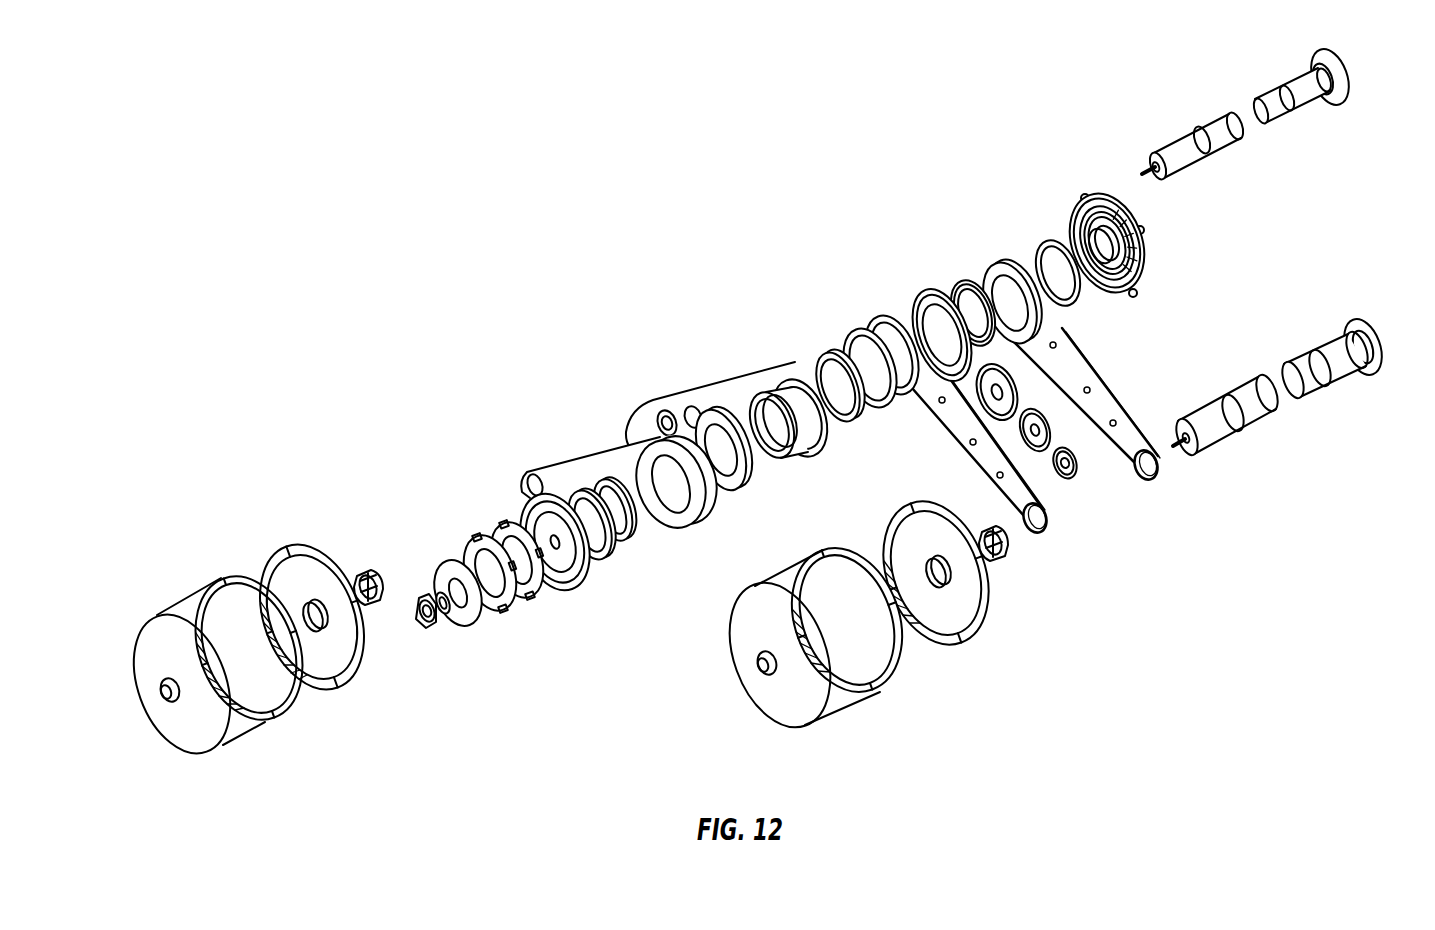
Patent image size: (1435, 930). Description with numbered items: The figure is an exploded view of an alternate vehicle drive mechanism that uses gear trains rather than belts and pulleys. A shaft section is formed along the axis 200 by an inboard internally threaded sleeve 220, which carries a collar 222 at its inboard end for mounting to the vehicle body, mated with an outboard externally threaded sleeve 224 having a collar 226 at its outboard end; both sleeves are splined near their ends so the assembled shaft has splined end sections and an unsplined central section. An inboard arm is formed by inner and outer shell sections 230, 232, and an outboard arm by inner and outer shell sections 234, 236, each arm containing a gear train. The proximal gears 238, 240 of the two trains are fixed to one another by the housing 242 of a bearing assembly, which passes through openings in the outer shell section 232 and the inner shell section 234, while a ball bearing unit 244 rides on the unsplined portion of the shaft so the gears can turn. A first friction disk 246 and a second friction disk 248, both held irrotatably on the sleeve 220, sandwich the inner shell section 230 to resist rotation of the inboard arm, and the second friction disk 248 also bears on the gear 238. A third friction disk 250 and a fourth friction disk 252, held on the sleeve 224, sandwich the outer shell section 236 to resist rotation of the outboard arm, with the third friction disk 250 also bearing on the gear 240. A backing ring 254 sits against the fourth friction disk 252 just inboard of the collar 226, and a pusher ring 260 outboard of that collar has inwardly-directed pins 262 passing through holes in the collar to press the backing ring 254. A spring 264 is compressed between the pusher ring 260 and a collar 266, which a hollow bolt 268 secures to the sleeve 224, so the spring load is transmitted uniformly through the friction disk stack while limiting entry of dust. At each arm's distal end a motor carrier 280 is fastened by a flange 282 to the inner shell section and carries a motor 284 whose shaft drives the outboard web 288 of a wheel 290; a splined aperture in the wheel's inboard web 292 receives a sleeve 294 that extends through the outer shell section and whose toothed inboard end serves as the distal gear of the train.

The axis 200 is at (1143, 230).
The inboard internally threaded sleeve 220 is at (1139, 262).
The collar 222 is at (1146, 243).
The outboard externally threaded sleeve 224 is at (589, 552).
The collar 226 is at (596, 557).
The inner shell section 230 is at (1099, 405).
The outer shell section 232 is at (1008, 456).
The inner shell section 234 is at (748, 400).
The outer shell section 236 is at (590, 469).
The proximal gear 238 is at (919, 320).
The proximal gear 240 is at (796, 441).
The housing 242 is at (862, 351).
The ball bearing unit 244 is at (860, 402).
The first friction disk 246 is at (1035, 248).
The second friction disk 248 is at (950, 282).
The third friction disk 250 is at (740, 464).
The fourth friction disk 252 is at (612, 462).
The backing ring 254 is at (579, 484).
The pusher ring 260 is at (560, 552).
The inwardly-directed pins 262 is at (490, 538).
The spring 264 is at (466, 563).
The collar 266 is at (492, 601).
The hollow bolt 268 is at (462, 630).
The motor carrier 280 is at (1332, 381).
The flange 282 is at (1378, 332).
The motor 284 is at (1227, 426).
The outboard web 288 is at (795, 655).
The wheel 290 is at (859, 636).
The inboard web 292 is at (950, 582).
The sleeve 294 is at (1029, 561).